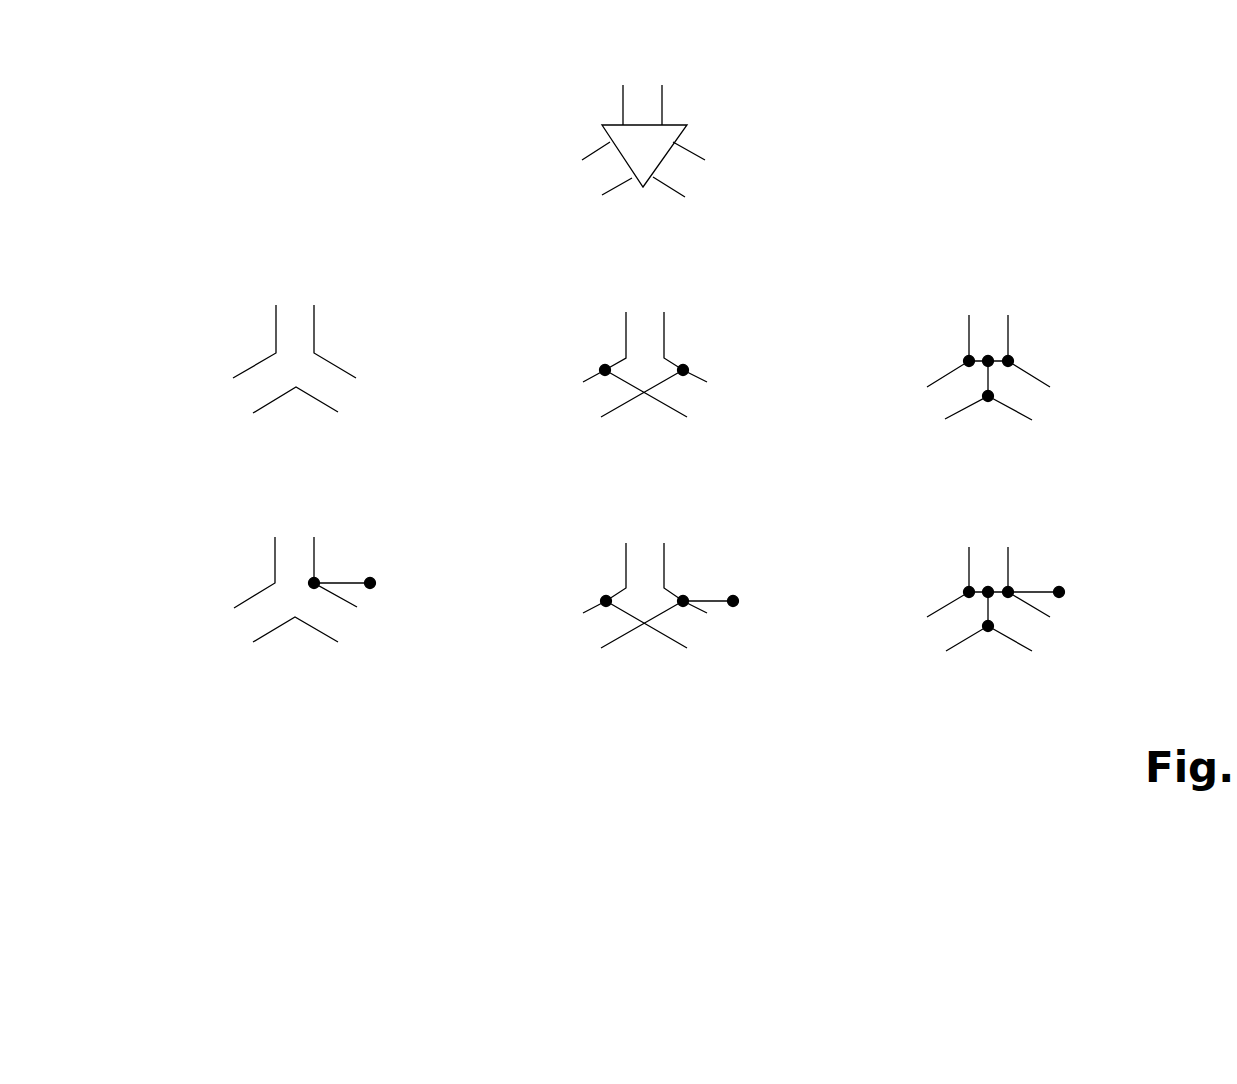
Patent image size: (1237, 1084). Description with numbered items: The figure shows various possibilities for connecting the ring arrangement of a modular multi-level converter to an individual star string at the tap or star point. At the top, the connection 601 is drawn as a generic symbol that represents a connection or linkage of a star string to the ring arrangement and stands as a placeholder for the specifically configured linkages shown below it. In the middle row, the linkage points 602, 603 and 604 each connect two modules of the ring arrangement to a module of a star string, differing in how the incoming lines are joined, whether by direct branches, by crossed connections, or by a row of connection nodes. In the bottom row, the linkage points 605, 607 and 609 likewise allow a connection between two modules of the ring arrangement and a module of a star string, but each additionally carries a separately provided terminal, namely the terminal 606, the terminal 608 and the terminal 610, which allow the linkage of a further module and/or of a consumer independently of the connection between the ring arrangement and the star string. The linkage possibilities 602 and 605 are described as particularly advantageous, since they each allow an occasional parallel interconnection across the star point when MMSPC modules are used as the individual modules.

The connection 601 is at (600, 125).
The linkage point 602 is at (258, 342).
The linkage point 603 is at (608, 348).
The linkage point 604 is at (952, 350).
The linkage point 605 is at (257, 572).
The terminal 606 is at (377, 587).
The linkage point 607 is at (608, 579).
The terminal 608 is at (740, 602).
The linkage point 609 is at (952, 582).
The terminal 610 is at (1067, 593).